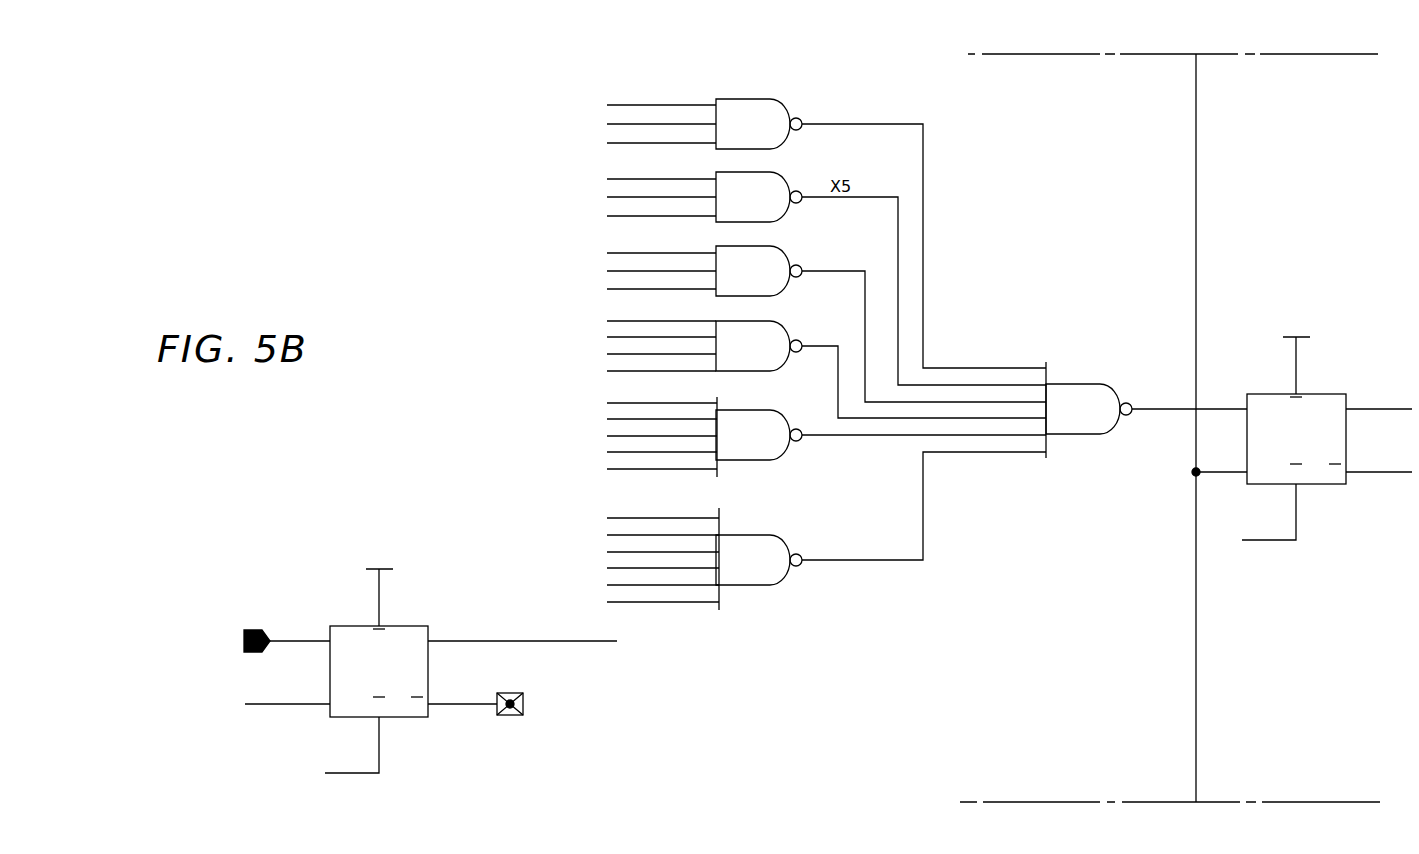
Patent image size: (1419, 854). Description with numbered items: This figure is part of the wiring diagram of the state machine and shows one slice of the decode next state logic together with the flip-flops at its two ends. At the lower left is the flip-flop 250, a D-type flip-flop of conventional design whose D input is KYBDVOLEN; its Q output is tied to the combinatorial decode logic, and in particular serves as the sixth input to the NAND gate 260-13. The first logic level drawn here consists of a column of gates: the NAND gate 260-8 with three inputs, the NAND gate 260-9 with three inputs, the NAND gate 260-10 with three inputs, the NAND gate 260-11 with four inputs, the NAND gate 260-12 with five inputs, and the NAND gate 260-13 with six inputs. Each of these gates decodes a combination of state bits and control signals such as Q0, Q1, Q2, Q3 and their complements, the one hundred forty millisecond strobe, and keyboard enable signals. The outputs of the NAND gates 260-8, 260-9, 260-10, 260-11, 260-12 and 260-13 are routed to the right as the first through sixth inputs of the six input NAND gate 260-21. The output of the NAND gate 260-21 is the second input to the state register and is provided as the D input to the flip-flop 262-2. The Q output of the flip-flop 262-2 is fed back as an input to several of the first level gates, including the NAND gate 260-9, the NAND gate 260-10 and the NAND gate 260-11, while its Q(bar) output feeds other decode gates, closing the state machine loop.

The flip-flop 250 is at (352, 626).
The NAND gate 260-8 is at (786, 101).
The NAND gate 260-9 is at (772, 172).
The NAND gate 260-10 is at (766, 246).
The NAND gate 260-11 is at (768, 322).
The NAND gate 260-12 is at (762, 461).
The NAND gate 260-13 is at (760, 535).
The six input NAND gate 260-21 is at (1068, 383).
The flip-flop 262-2 is at (1313, 394).